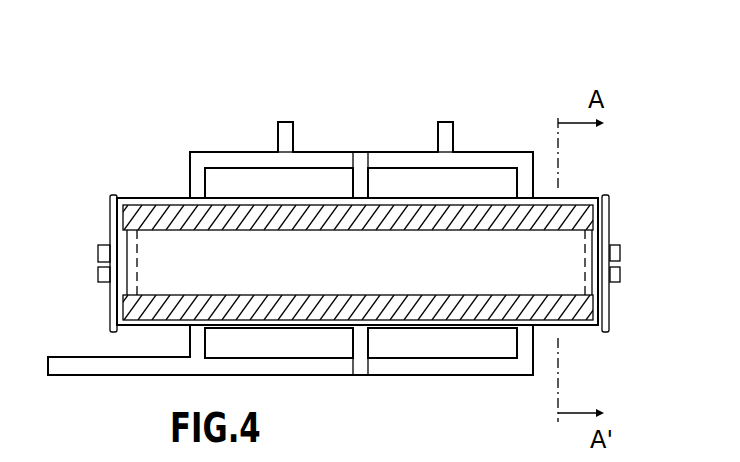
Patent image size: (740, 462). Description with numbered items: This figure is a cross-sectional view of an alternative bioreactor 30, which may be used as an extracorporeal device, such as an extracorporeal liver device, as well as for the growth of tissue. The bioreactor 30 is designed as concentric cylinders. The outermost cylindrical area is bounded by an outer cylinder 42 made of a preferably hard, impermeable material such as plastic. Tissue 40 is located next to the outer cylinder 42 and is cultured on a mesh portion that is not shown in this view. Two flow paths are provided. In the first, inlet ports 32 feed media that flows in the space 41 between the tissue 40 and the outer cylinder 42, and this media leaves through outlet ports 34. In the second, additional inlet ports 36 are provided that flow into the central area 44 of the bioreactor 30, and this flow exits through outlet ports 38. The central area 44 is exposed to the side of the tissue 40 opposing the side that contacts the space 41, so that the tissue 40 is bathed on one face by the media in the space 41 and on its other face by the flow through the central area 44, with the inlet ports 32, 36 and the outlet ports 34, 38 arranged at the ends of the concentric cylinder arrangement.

The alternative bioreactor 30 is at (499, 94).
The inlet ports 32 is at (443, 121).
The outlet ports 34 is at (523, 355).
The additional inlet ports 36 is at (82, 277).
The outlet ports 38 is at (636, 290).
The tissue 40 is at (418, 221).
The space 41 is at (181, 197).
The outer cylinder 42 is at (580, 330).
The central area 44 is at (545, 281).